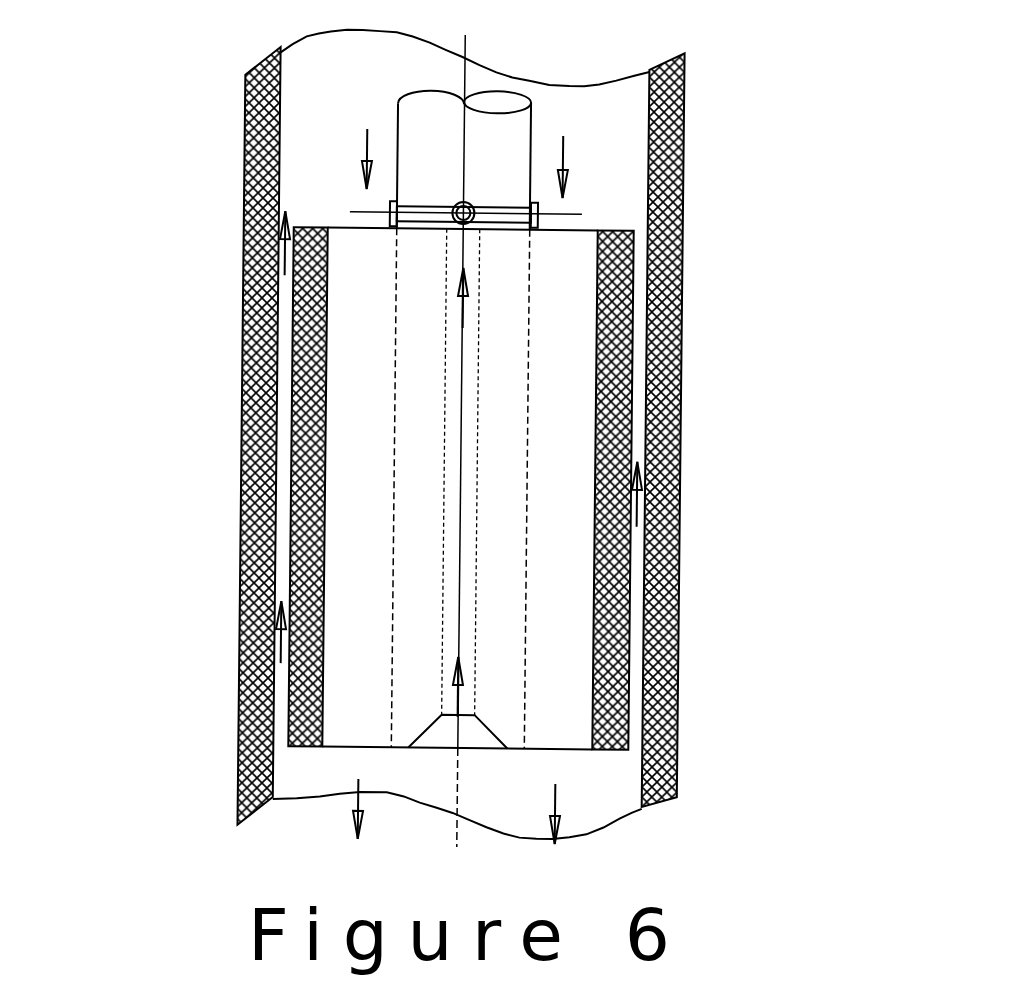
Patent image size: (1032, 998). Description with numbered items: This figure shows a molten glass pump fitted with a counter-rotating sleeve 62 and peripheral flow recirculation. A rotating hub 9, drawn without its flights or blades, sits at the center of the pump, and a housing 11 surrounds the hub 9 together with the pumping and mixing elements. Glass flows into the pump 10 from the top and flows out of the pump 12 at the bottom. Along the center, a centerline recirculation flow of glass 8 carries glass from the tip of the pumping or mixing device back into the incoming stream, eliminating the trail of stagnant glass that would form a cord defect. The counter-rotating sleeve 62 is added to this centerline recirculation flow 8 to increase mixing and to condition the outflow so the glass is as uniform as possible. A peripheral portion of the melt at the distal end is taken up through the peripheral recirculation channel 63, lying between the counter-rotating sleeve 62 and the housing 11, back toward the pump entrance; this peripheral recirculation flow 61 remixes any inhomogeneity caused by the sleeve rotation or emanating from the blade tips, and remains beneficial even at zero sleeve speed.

The centerline recirculation flow of glass 8 is at (655, 488).
The rotating hub 9 is at (622, 434).
The glass flow into the pump 10 is at (359, 99).
The housing 11 is at (577, 438).
The glass flow out of the pump 12 is at (351, 769).
The peripheral recirculation flow 61 is at (351, 439).
The counter-rotating sleeve 62 is at (748, 485).
The peripheral recirculation channel 63 is at (330, 482).